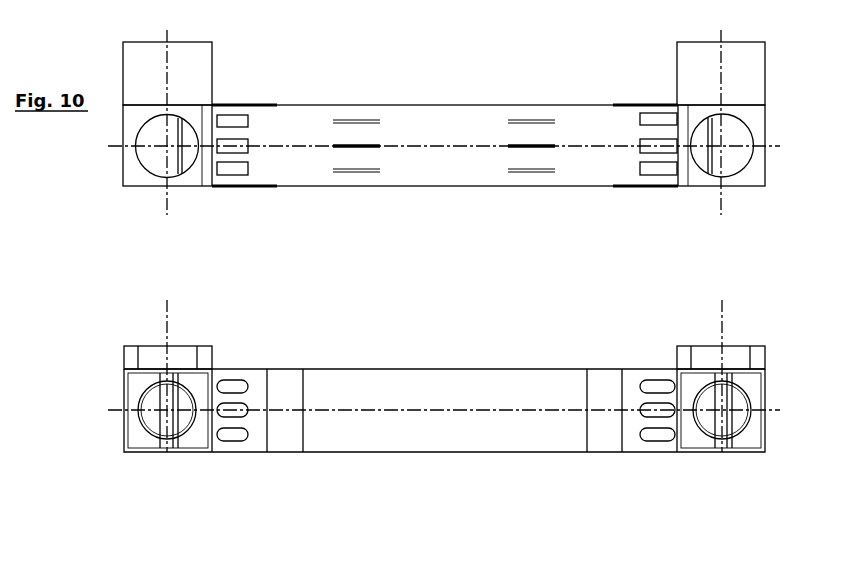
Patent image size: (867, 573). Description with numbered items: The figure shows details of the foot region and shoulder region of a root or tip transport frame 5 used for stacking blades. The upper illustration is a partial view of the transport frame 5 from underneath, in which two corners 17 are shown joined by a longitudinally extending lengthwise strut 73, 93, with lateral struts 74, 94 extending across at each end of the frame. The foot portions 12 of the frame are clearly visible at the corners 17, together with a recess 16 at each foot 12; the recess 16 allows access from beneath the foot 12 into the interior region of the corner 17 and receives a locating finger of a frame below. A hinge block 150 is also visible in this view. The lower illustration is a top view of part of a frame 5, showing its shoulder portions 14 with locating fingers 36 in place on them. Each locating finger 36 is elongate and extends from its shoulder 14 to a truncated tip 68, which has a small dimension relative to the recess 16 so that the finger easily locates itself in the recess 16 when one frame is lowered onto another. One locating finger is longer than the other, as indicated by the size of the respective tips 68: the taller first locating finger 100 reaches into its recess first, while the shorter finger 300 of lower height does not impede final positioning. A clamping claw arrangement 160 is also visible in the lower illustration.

The transport frame 5 is at (362, 223).
The frame foot 12 is at (693, 173).
The shoulder 14 is at (199, 447).
The recess 16 is at (162, 135).
The corner 17 is at (96, 164).
The locating finger 36 is at (168, 433).
The truncated tip 68 is at (166, 400).
The lengthwise strut 73 is at (433, 137).
The lengthwise strut 93 is at (444, 244).
The lateral strut 74 is at (700, 78).
The lateral strut 94 is at (373, 234).
The first locating finger 100 is at (710, 332).
The hinge block 150 is at (232, 160).
The clamping claw arrangement 160 is at (660, 393).
The locating finger of lower height 300 is at (161, 336).